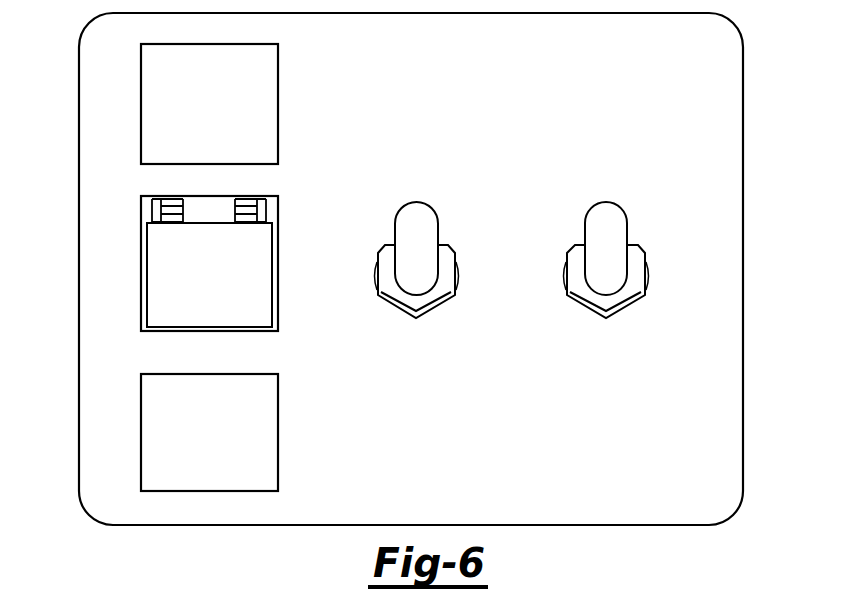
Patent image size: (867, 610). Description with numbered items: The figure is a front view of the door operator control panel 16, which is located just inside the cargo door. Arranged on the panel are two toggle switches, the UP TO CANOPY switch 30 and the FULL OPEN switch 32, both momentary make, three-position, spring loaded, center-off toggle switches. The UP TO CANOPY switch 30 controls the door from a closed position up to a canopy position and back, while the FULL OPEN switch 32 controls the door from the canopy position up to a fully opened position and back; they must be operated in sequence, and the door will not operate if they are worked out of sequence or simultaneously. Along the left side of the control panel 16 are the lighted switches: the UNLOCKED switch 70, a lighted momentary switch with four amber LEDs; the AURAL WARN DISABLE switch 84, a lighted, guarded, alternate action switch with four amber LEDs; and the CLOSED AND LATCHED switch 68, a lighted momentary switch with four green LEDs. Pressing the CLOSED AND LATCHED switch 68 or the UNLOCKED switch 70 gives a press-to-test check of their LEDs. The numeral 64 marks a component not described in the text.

The door operator control panel 16 is at (743, 235).
The UNLOCKED switch 70 is at (141, 83).
The AURAL WARN DISABLE switch 84 is at (140, 270).
The aural warning disable switch 64 is at (100, 282).
The CLOSED AND LATCHED switch 68 is at (141, 408).
The UP TO CANOPY switch 30 is at (396, 224).
The FULL OPEN switch 32 is at (626, 221).